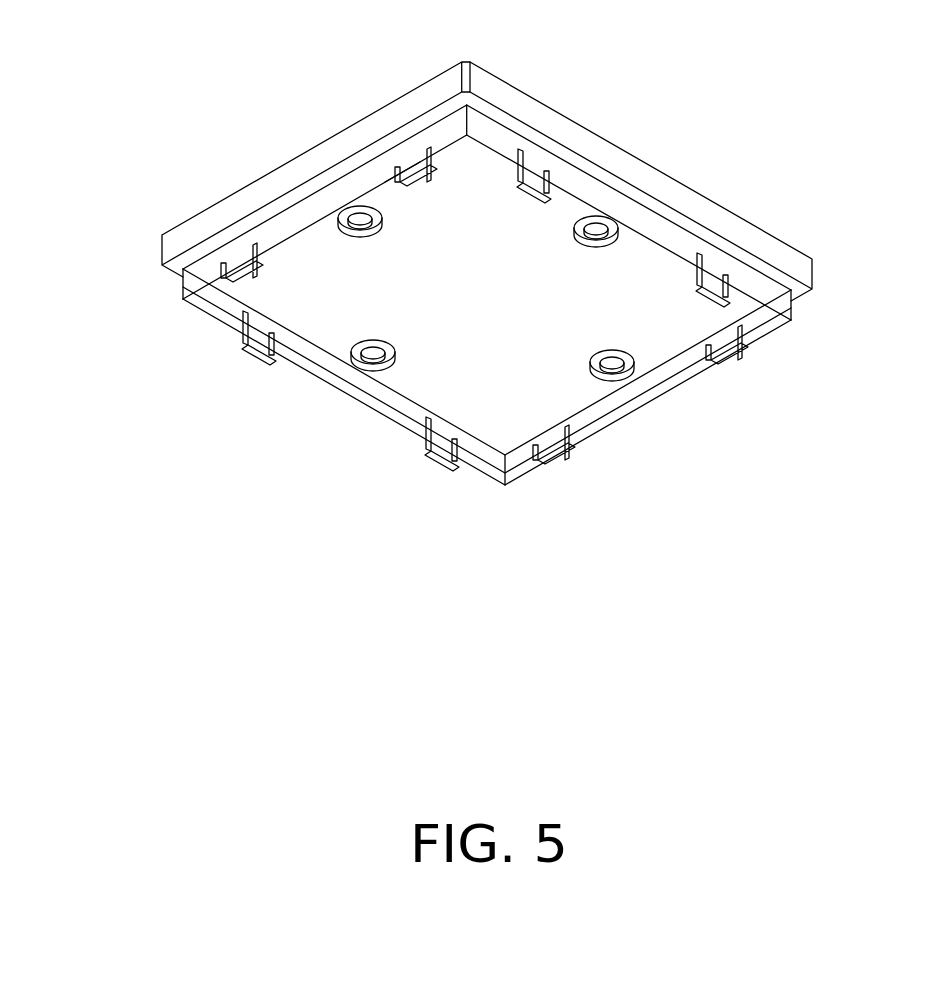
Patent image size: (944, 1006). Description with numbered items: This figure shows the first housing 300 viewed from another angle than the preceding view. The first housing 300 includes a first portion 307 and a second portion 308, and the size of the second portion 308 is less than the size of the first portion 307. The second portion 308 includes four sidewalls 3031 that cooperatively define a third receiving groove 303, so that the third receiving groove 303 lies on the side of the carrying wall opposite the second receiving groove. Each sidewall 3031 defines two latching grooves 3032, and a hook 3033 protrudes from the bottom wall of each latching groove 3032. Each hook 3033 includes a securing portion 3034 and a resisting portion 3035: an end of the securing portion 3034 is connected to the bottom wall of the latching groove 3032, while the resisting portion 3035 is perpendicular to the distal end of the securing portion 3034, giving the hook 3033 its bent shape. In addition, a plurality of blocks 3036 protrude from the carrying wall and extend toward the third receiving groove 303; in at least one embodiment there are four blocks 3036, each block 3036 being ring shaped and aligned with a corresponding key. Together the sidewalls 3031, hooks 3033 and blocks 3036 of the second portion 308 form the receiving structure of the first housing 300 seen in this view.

The first housing 300 is at (281, 50).
The third receiving groove 303 is at (488, 404).
The sidewall 3031 is at (615, 210).
The latching groove 3032 is at (398, 163).
The hook 3033 is at (413, 168).
The securing portion 3034 is at (246, 328).
The resisting portion 3035 is at (248, 344).
The block 3036 is at (357, 219).
The first portion 307 is at (465, 68).
The second portion 308 is at (470, 127).